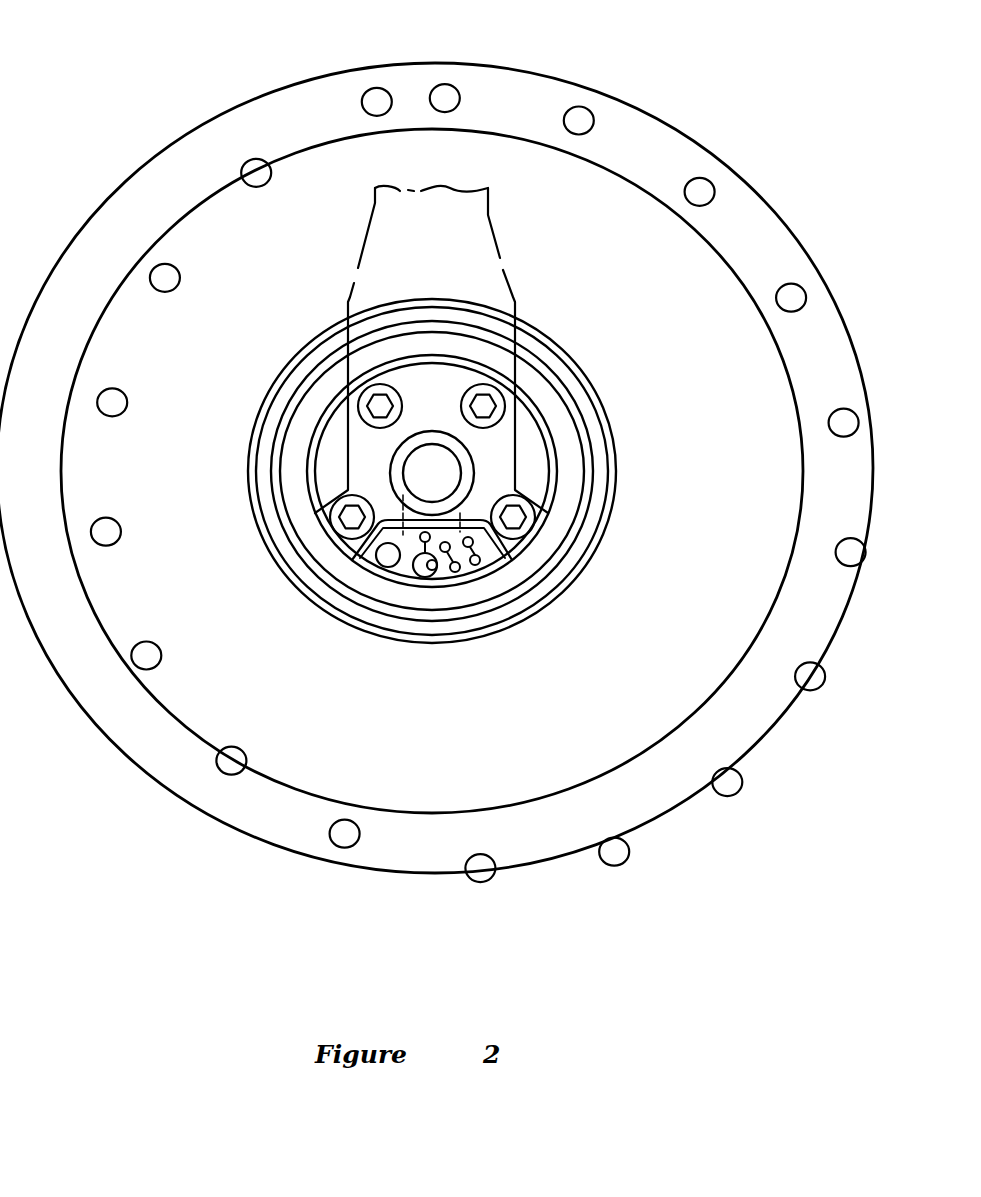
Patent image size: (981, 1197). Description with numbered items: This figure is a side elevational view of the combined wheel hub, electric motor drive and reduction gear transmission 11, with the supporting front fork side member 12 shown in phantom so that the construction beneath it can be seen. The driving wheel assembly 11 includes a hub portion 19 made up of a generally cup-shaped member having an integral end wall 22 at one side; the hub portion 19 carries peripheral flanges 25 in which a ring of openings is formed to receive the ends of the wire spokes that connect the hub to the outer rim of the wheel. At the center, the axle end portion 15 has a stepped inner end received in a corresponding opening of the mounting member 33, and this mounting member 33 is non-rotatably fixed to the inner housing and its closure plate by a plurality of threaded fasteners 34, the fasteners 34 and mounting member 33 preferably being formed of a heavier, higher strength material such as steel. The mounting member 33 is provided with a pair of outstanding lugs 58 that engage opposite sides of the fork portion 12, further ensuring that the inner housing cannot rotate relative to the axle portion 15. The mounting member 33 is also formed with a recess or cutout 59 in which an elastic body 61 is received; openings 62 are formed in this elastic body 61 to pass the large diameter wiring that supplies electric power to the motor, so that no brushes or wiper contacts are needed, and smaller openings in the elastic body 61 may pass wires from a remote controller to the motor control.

The combined wheel hub, electric motor drive and reduction gear transmission 11 is at (684, 79).
The hub portion 19 is at (711, 147).
The end wall 22 is at (730, 292).
The peripheral flanges 25 is at (743, 222).
The depending side members of the front fork assembly 12 is at (490, 217).
The threaded fasteners 34 is at (497, 402).
The outstanding lugs 58 is at (325, 452).
The axle end portion 15 is at (447, 465).
The mounting member 33 is at (337, 562).
The recess or cutout 59 is at (498, 565).
The elastic body 61 is at (403, 570).
The openings 62 is at (432, 572).